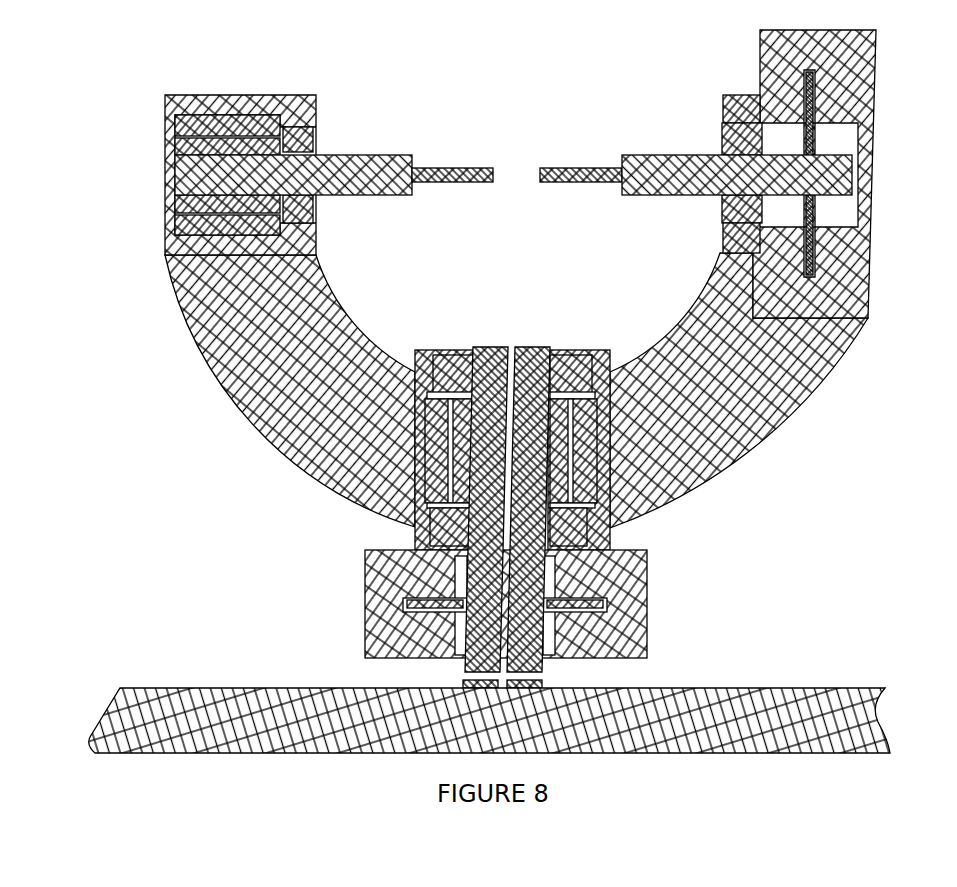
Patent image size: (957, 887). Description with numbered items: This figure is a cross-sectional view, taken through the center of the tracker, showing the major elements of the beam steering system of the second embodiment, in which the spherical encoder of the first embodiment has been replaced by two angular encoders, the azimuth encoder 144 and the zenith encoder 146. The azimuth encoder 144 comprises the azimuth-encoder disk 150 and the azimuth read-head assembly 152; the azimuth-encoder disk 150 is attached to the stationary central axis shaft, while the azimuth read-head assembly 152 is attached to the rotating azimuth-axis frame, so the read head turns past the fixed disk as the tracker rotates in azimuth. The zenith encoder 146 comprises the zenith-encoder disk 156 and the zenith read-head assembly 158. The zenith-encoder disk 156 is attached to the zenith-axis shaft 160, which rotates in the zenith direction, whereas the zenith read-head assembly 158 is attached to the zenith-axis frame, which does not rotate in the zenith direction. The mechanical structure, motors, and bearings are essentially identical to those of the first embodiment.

The azimuth encoder 144 is at (310, 573).
The zenith encoder 146 is at (895, 85).
The azimuth-encoder disk 150 is at (607, 601).
The azimuth read-head assembly 152 is at (647, 630).
The zenith-encoder disk 156 is at (810, 278).
The zenith read-head assembly 158 is at (868, 252).
The zenith-axis shaft 160 is at (835, 178).